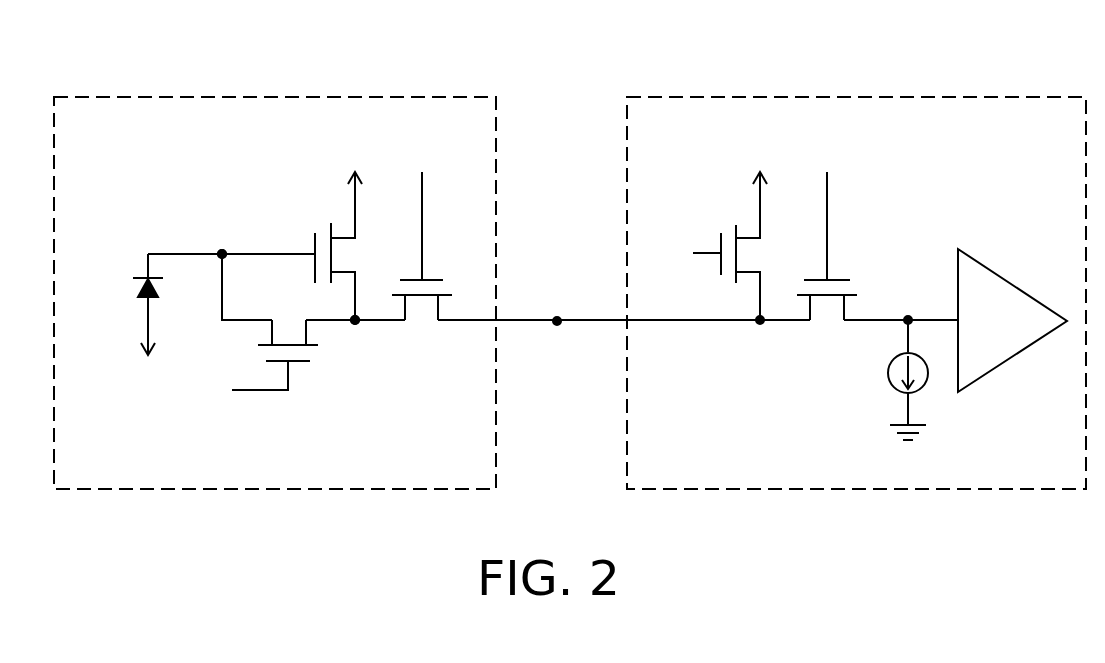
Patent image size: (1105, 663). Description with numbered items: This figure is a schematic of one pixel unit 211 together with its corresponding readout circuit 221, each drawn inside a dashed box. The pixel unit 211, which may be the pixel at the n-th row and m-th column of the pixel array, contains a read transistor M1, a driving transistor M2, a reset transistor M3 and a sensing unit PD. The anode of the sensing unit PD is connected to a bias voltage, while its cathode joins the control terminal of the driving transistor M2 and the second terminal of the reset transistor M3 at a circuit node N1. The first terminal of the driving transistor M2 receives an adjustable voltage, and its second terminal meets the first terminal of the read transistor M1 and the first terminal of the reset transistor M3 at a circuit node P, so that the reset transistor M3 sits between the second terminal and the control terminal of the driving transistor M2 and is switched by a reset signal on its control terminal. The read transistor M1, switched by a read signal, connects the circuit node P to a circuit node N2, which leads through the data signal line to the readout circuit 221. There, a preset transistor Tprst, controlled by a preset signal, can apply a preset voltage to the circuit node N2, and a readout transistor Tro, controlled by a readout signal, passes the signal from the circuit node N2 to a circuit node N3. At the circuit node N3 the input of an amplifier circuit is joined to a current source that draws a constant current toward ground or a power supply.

The pixel unit 211 is at (289, 96).
The readout circuit 221 is at (856, 96).
The circuit node N1 is at (222, 252).
The circuit node N2 is at (557, 325).
The circuit node N3 is at (908, 318).
The circuit node P is at (355, 324).
The sensing unit PD is at (140, 279).
The read transistor M1 is at (422, 248).
The driving transistor M2 is at (341, 231).
The reset transistor M3 is at (240, 369).
The preset transistor Tprst is at (719, 231).
The readout transistor Tro is at (827, 246).